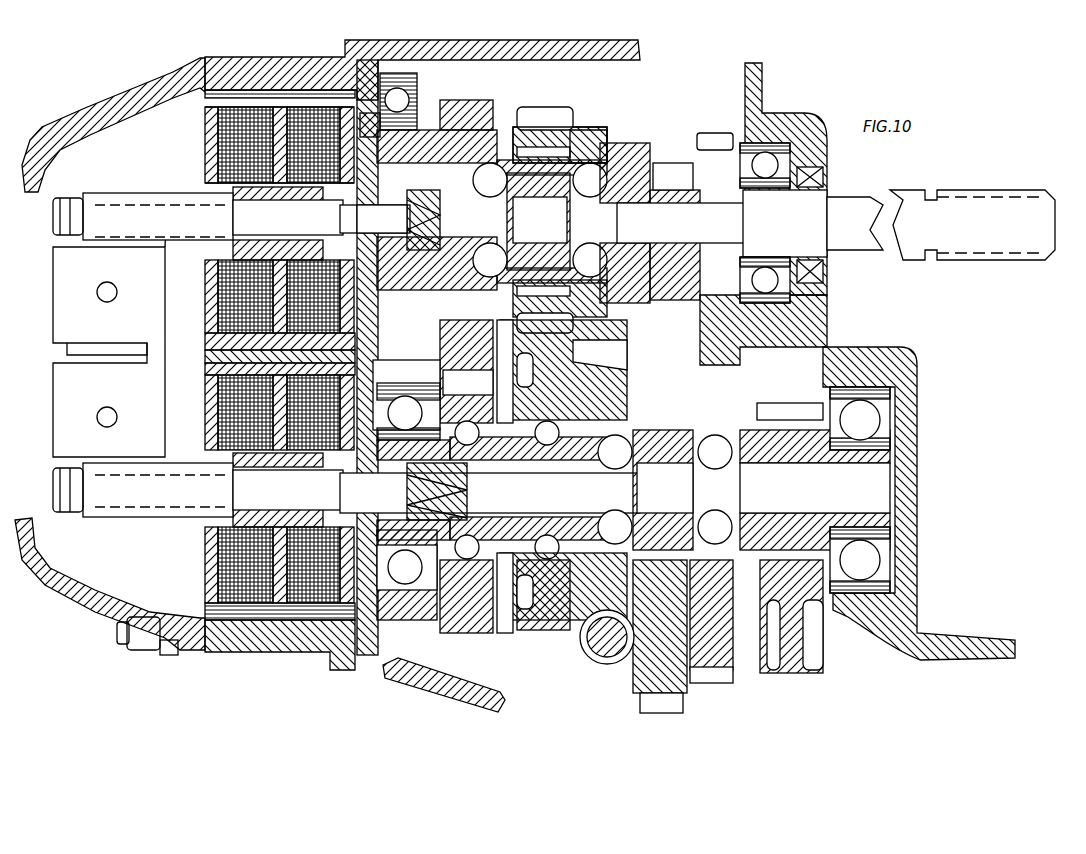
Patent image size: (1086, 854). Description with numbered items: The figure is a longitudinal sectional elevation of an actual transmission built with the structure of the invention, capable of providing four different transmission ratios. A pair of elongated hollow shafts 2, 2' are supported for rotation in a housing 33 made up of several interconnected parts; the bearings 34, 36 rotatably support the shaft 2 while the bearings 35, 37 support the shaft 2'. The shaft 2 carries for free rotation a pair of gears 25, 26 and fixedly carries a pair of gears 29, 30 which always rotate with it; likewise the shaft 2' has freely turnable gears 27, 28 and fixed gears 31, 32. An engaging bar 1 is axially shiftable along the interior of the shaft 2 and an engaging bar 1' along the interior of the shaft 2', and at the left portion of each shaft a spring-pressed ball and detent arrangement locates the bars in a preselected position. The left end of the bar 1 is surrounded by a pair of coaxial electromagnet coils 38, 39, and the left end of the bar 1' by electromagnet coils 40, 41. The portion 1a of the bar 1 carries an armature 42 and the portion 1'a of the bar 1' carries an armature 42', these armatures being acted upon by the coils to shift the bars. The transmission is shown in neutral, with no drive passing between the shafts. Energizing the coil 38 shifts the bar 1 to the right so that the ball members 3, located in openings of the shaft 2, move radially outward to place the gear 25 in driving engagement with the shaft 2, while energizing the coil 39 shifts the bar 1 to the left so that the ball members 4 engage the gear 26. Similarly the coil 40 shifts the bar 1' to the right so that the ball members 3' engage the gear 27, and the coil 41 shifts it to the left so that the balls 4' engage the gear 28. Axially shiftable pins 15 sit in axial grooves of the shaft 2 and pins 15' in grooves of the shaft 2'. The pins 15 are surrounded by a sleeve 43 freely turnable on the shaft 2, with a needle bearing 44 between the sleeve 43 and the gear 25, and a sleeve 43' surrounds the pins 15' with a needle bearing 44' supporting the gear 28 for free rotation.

The engaging bar 1 is at (344, 258).
The engaging bar 1' is at (346, 530).
The portion of the bar 1a is at (257, 227).
The portion of the bar 1'a is at (254, 574).
The elongated hollow shaft 2 is at (528, 199).
The elongated hollow shaft 2' is at (543, 632).
The ball members 3 is at (638, 193).
The ball members 3' is at (815, 490).
The ball members 4 is at (540, 221).
The balls 4' is at (665, 490).
The axially shiftable pins 15 is at (537, 205).
The axially shiftable pins 15' is at (722, 636).
The gear 25 is at (573, 133).
The gear 26 is at (480, 100).
The gear 27 is at (760, 673).
The gear 28 is at (657, 657).
The gear 29 is at (673, 170).
The gear 30 is at (715, 138).
The gear 31 is at (553, 337).
The gear 32 is at (495, 637).
The housing 33 is at (233, 73).
The bearing 34 is at (793, 287).
The bearing 35 is at (890, 557).
The bearing 36 is at (220, 403).
The bearing 37 is at (443, 617).
The electromagnet coil 38 is at (220, 163).
The electromagnet coil 39 is at (220, 130).
The electromagnet coil 40 is at (277, 657).
The electromagnet coil 41 is at (170, 657).
The armature 42 is at (203, 339).
The armature 42' is at (162, 546).
The sleeve 43 is at (600, 133).
The sleeve 43' is at (508, 399).
The needle bearing 44 is at (560, 196).
The needle bearing 44' is at (600, 462).